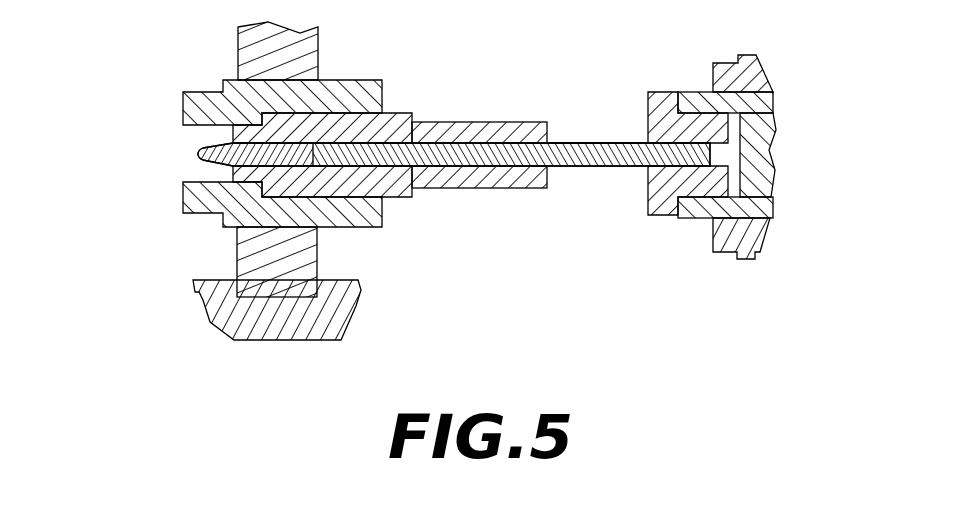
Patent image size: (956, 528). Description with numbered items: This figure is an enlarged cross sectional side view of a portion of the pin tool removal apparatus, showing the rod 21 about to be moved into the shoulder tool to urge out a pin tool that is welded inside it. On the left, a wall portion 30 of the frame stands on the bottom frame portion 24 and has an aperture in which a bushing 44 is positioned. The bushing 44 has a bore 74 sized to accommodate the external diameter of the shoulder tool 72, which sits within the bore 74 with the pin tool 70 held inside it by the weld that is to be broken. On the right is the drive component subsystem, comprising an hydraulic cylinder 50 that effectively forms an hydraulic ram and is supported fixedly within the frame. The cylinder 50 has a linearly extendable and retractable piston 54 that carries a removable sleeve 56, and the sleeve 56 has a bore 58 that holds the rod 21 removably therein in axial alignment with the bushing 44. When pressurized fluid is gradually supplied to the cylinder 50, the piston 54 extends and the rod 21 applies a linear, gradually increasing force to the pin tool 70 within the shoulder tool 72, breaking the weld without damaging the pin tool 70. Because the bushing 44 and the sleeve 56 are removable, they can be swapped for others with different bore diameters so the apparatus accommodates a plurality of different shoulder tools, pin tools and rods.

The rod 21 is at (579, 143).
The bottom frame portion 24 is at (340, 312).
The wall portion 30 is at (245, 48).
The bushing 44 is at (190, 198).
The hydraulic cylinder 50 is at (762, 142).
The piston 54 is at (772, 143).
The sleeve 56 is at (650, 118).
The bore 58 is at (669, 166).
The pin tool 70 is at (201, 150).
The shoulder tool 72 is at (402, 113).
The bore 74 is at (412, 167).